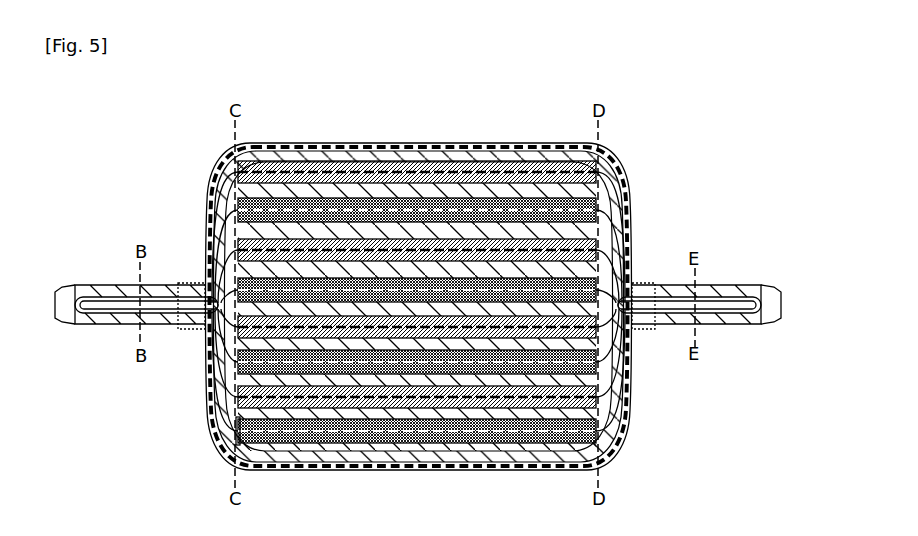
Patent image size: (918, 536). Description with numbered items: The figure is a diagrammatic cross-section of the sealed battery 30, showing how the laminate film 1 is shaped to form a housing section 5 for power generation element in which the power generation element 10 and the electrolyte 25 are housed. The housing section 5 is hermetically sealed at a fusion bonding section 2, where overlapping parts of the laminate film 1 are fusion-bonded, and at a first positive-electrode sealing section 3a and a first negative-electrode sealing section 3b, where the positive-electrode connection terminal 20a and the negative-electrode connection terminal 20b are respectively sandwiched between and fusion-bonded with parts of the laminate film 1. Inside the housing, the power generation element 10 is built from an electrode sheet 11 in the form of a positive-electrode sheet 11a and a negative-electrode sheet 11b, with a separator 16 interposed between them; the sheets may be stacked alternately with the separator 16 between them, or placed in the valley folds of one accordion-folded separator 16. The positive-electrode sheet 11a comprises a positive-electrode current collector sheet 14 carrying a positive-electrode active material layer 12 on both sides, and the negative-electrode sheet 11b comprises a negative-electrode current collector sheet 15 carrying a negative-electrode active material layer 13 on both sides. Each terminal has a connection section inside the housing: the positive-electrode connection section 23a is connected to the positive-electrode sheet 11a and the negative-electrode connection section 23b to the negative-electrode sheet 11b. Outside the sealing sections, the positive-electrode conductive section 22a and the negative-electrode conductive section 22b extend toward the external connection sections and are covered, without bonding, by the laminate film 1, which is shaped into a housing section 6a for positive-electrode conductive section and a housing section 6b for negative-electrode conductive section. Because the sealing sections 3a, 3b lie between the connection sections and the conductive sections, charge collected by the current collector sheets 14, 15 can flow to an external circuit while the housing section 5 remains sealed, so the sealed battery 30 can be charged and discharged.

The laminate film 1 is at (434, 311).
The fusion bonding section 2 is at (781, 294).
The first positive-electrode sealing section 3a is at (640, 283).
The first negative-electrode sealing section 3b is at (195, 330).
The housing section for power generation element 5 is at (353, 462).
The housing section for positive-electrode conductive section 6a is at (712, 320).
The housing section for negative-electrode conductive section 6b is at (88, 322).
The power generation element 10 is at (435, 311).
The electrode sheet 11 is at (435, 311).
The positive-electrode sheet 11a is at (484, 318).
The negative-electrode sheet 11b is at (368, 311).
The positive-electrode active material layer 12 is at (598, 437).
The negative-electrode active material layer 13 is at (467, 400).
The positive-electrode current collector sheet 14 is at (598, 425).
The negative-electrode current collector sheet 15 is at (490, 400).
The separator 16 is at (327, 412).
The positive-electrode connection terminal 20a is at (717, 301).
The negative-electrode connection terminal 20b is at (156, 301).
The positive-electrode conductive section 22a is at (733, 312).
The negative-electrode conductive section 22b is at (122, 308).
The positive-electrode connection section 23a is at (630, 330).
The negative-electrode connection section 23b is at (215, 292).
The electrolyte 25 is at (238, 426).
The sealed battery 30 is at (434, 311).